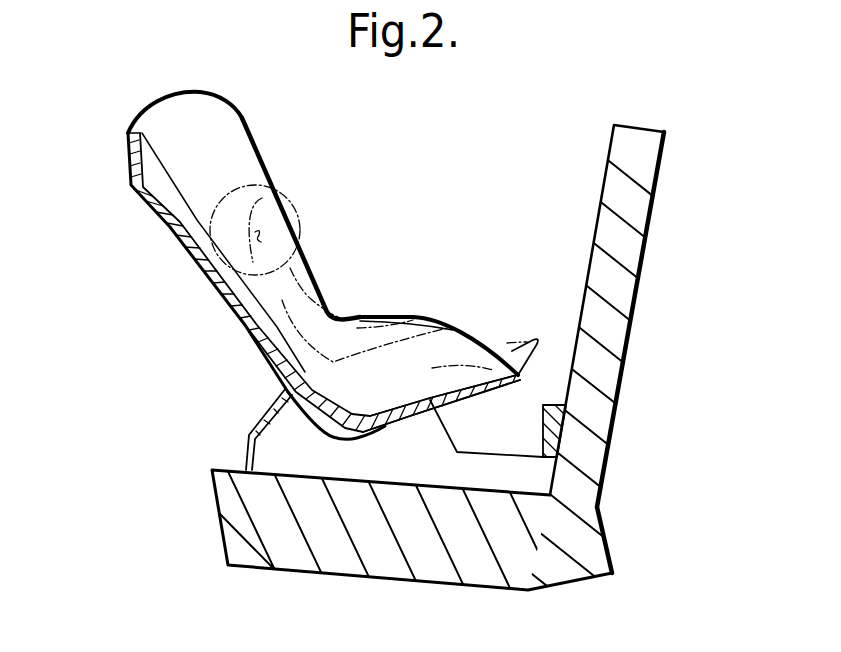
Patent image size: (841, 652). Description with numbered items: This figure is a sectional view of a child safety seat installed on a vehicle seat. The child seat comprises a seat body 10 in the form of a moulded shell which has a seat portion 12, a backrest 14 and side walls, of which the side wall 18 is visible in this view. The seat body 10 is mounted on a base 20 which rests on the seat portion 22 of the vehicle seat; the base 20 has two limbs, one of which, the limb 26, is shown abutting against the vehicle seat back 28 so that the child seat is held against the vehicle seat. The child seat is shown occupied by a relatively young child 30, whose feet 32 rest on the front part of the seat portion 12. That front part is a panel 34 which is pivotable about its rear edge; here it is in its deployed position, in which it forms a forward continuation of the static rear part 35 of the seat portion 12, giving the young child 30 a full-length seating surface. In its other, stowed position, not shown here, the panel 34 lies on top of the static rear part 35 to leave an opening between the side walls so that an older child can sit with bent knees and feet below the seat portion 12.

The seat body 10 is at (294, 265).
The seat portion 12 is at (413, 374).
The backrest 14 is at (140, 198).
The side wall 18 is at (233, 119).
The base 20 is at (263, 420).
The seat portion of a vehicle seat 22 is at (347, 553).
The limb 26 is at (553, 437).
The vehicle seat back 28 is at (633, 217).
The child 30 is at (337, 290).
The feet 32 is at (527, 345).
The panel 34 is at (496, 388).
The static rear part 35 is at (403, 420).